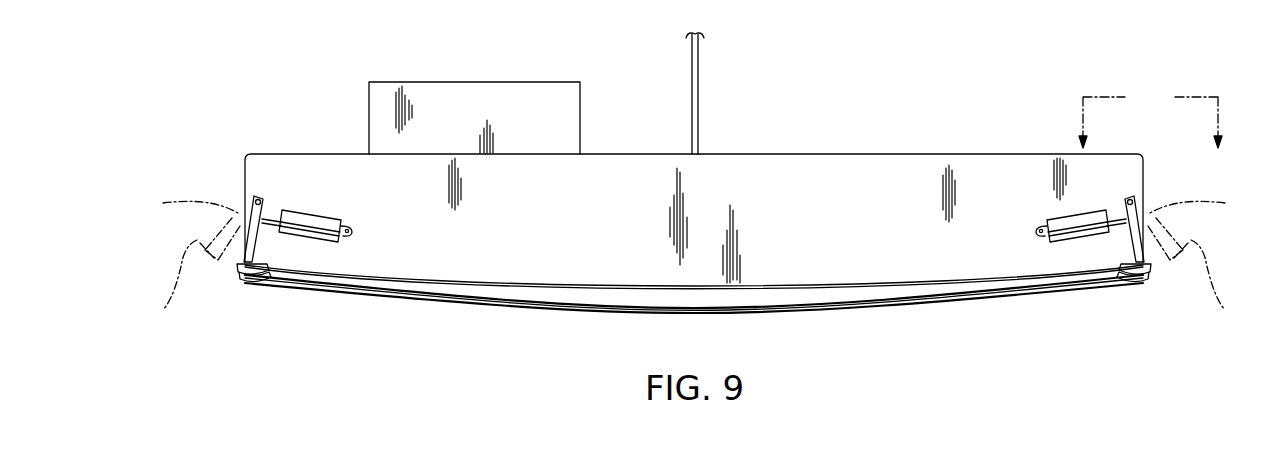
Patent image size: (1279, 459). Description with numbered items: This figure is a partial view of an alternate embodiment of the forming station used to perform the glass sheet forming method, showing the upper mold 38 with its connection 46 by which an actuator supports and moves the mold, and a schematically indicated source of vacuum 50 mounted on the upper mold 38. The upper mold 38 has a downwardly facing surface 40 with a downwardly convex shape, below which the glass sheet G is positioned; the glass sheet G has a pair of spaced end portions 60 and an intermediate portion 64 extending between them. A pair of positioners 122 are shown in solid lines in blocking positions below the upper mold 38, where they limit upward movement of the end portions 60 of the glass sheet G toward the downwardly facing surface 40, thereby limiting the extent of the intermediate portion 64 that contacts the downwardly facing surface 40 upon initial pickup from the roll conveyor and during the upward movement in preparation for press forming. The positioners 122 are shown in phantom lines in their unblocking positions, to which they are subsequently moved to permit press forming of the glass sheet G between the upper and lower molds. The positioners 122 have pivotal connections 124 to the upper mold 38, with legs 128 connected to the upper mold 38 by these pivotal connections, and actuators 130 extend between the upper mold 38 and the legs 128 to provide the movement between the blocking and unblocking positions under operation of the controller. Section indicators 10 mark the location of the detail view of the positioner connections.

The section line indicator 10 is at (1146, 108).
The upper mold 38 is at (824, 154).
The downwardly facing surface 40 is at (662, 307).
The connection 46 is at (698, 95).
The source of vacuum 50 is at (471, 82).
The end portions 60 is at (300, 292).
The intermediate portion 64 is at (768, 316).
The positioners 122 is at (233, 268).
The pivotal connections 124 is at (256, 199).
The legs 128 is at (240, 226).
The actuators 130 is at (310, 212).
The glass sheet G is at (506, 315).